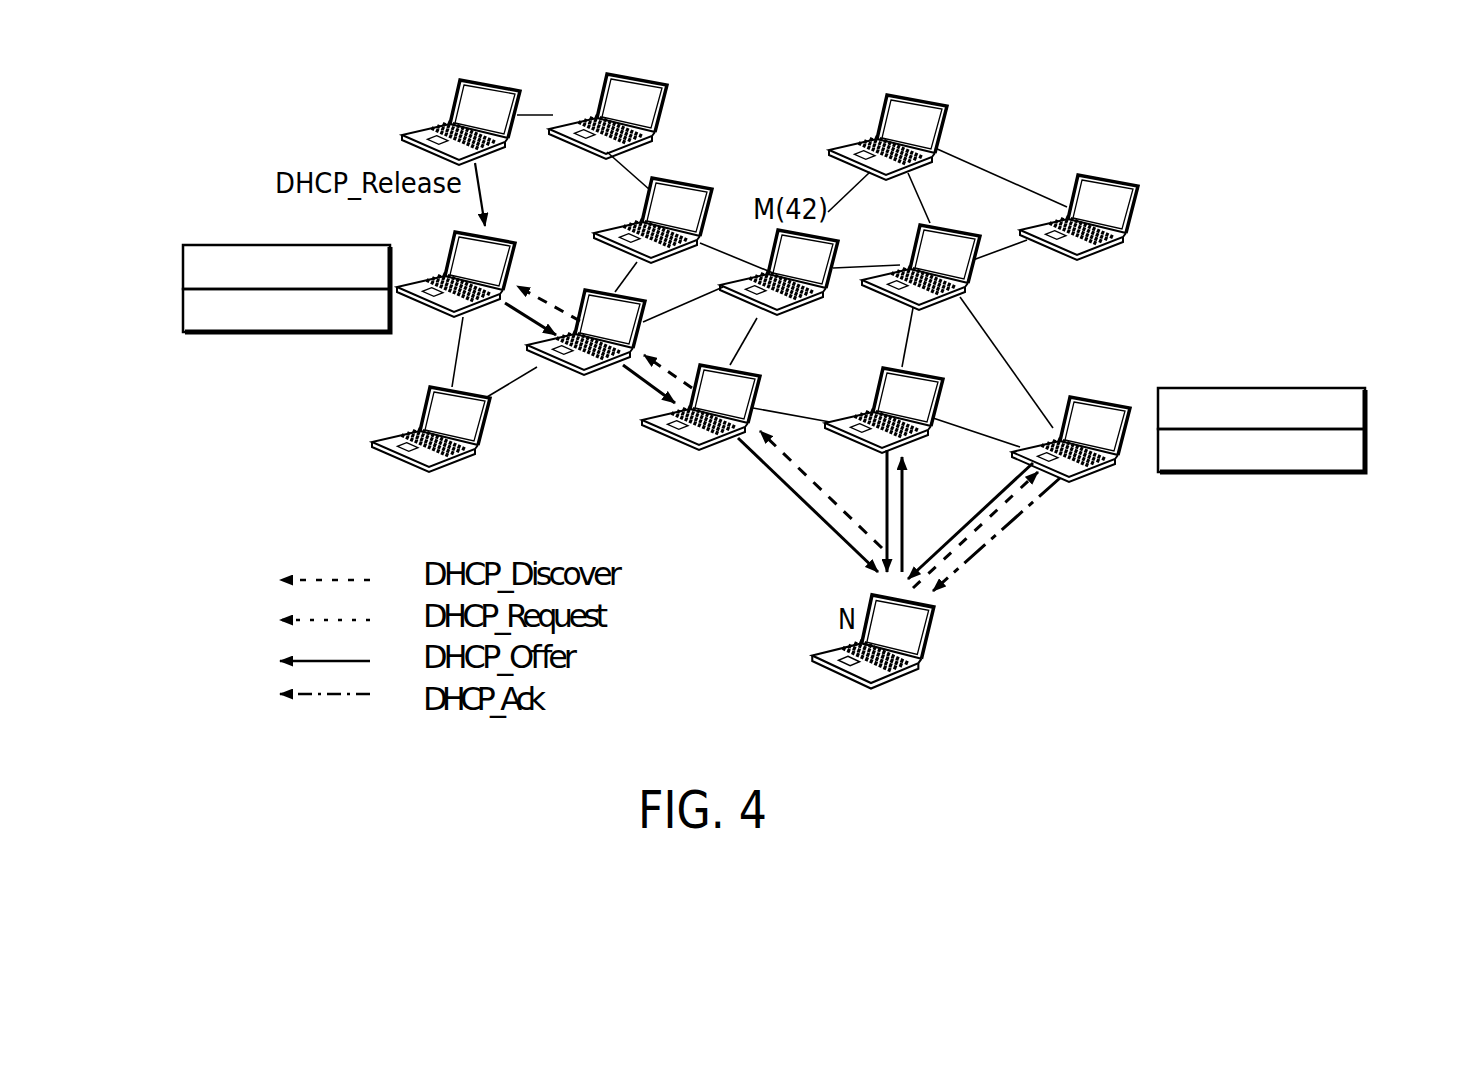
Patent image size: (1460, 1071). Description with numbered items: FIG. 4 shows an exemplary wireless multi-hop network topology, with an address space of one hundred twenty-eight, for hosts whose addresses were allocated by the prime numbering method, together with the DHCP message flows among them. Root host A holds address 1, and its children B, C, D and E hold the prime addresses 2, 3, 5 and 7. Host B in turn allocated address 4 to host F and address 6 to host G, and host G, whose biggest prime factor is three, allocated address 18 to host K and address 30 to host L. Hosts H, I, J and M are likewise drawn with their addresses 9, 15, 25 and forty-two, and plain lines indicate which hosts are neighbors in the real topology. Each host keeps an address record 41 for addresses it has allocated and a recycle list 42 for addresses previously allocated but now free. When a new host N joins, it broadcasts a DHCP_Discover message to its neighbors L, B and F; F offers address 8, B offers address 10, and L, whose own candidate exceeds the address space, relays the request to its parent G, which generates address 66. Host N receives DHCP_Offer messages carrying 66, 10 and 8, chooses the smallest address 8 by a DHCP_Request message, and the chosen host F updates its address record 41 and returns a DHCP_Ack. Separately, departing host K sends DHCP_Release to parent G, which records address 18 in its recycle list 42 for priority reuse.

The address record 41 is at (183, 270).
The recycle list 42 is at (183, 315).
The address of host K 18 is at (439, 122).
The node H 9 is at (602, 116).
The address of host D 5 is at (666, 204).
The address of host G 6 is at (478, 261).
The address of host E 7 is at (882, 137).
The node I 15 is at (957, 271).
The node J 25 is at (1087, 235).
The address of root host A 1 is at (586, 352).
The address of host C 3 is at (425, 427).
The address of host L 30 is at (736, 396).
The address of host B 2 is at (898, 397).
The address of host F 4 is at (1073, 423).
The address offered by host L 66 is at (810, 501).
The address offered by host B 10 is at (877, 511).
The address offered by host F 8 is at (984, 526).